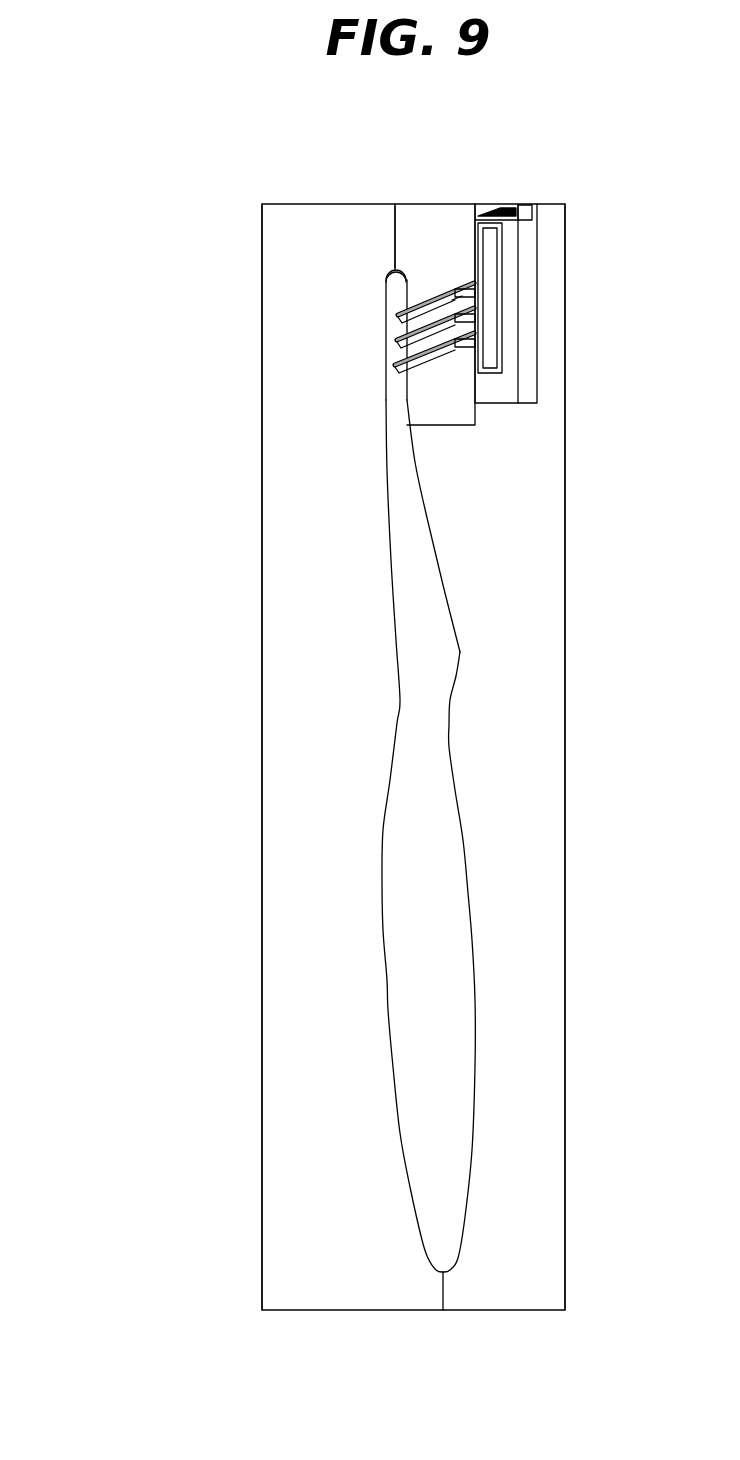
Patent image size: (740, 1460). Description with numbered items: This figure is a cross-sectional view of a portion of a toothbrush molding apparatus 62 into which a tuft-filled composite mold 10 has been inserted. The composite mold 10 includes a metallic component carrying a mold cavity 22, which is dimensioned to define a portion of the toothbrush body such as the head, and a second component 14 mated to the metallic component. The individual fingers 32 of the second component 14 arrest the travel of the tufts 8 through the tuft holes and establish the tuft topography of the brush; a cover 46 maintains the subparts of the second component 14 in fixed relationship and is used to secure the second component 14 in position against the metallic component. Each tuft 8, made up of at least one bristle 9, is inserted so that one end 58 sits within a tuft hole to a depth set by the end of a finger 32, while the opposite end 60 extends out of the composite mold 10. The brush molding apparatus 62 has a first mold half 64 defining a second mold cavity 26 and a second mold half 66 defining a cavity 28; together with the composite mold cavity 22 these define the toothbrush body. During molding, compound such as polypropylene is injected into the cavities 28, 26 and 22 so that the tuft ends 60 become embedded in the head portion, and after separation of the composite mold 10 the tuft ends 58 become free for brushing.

The tuft 8 is at (398, 336).
The bristle 9 is at (400, 316).
The composite mold 10 is at (444, 198).
The second component 14 is at (487, 320).
The mold cavity 22 is at (406, 280).
The second mold cavity 26 is at (386, 275).
The cavity 28 is at (457, 970).
The finger 32 is at (476, 286).
The cover 46 is at (510, 240).
The end of tuft 58 is at (451, 305).
The opposite end of tuft 60 is at (398, 323).
The brush molding apparatus 62 is at (156, 834).
The first mold half 64 is at (277, 1238).
The second mold half 66 is at (557, 1192).